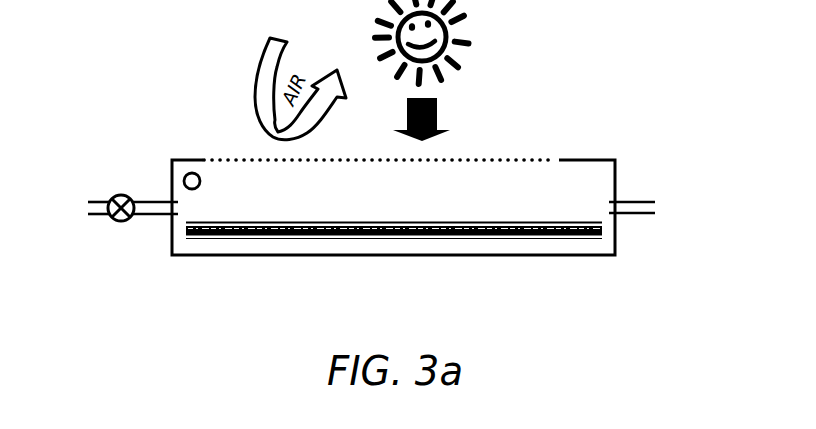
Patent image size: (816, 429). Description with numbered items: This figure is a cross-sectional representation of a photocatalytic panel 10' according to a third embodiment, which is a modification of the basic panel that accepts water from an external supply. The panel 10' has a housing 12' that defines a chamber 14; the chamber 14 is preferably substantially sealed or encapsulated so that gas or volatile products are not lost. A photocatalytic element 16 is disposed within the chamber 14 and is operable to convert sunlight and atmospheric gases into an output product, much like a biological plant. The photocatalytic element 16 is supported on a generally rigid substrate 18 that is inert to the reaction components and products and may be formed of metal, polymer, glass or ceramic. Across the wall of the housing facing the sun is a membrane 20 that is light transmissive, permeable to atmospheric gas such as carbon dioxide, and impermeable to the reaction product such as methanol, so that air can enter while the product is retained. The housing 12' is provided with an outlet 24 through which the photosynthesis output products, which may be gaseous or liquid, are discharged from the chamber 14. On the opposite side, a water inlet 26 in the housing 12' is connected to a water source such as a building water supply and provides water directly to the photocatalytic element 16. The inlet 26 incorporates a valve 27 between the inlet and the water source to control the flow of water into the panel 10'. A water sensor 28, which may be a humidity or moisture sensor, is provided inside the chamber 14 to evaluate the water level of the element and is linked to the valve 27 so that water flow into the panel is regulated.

The photocatalytic panel 10' is at (393, 251).
The housing 12' is at (393, 250).
The chamber 14 is at (491, 204).
The photocatalytic element 16 is at (302, 222).
The substrate 18 is at (403, 237).
The membrane 20 is at (518, 160).
The outlet 24 is at (637, 202).
The water inlet 26 is at (152, 216).
The valve 27 is at (121, 195).
The water sensor 28 is at (193, 173).